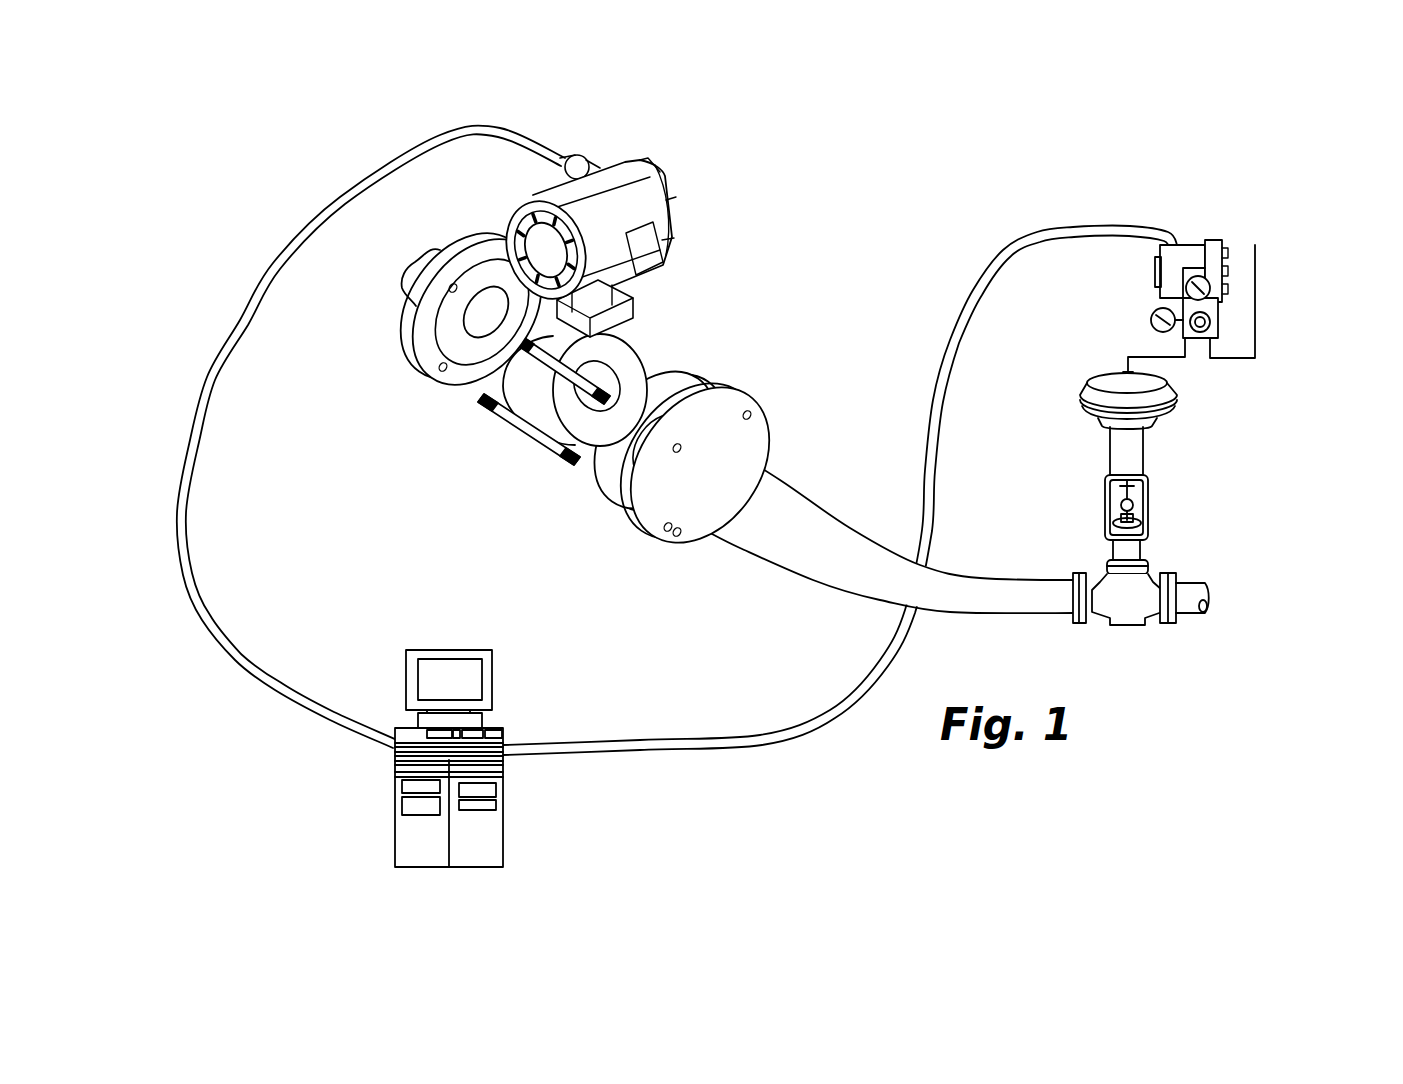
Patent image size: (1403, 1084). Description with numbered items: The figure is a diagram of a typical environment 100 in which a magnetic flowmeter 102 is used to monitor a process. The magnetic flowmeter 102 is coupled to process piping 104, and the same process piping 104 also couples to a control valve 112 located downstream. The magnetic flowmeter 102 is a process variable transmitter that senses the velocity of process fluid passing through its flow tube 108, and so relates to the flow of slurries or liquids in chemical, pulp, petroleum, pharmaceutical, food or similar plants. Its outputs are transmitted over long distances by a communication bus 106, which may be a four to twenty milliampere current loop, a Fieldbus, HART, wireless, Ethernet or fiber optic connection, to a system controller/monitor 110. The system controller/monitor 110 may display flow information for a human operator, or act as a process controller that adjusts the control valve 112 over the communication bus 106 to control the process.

The environment 100 is at (798, 318).
The magnetic flowmeter 102 is at (524, 362).
The process piping 104 is at (836, 577).
The communication bus 106 is at (205, 426).
The flow tube 108 is at (644, 346).
The system controller/monitor 110 is at (545, 787).
The control valve 112 is at (1152, 460).